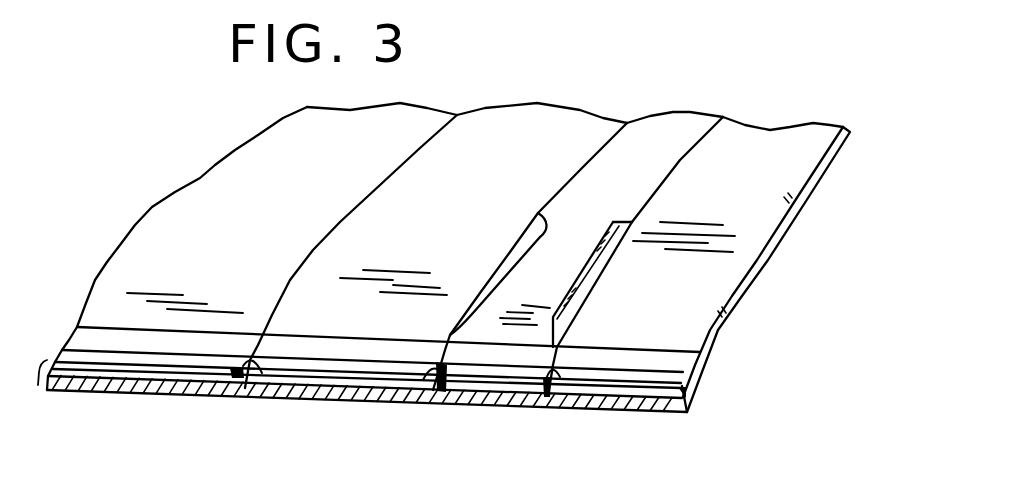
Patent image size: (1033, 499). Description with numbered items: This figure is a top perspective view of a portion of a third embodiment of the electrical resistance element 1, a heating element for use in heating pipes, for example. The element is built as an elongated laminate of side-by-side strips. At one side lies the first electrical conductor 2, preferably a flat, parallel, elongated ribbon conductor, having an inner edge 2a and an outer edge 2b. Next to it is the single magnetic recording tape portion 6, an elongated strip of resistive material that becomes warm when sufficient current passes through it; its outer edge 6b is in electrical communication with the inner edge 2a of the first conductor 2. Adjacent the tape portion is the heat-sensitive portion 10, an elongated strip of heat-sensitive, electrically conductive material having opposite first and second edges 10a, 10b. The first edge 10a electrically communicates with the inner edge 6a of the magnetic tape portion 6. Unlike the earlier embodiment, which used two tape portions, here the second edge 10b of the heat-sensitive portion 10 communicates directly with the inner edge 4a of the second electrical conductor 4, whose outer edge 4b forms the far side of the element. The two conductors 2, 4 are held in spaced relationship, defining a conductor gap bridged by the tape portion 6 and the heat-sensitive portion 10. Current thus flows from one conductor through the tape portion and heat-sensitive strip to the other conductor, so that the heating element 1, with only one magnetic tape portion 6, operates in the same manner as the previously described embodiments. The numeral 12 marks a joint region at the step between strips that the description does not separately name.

The electrical resistance element 1 is at (150, 200).
The first electrical conductor 2 is at (138, 390).
The inner edge of first electrical conductor 2a is at (243, 380).
The outer edge of first electrical conductor 2b is at (38, 385).
The second electrical conductor 4 is at (613, 383).
The inner edge of second electrical conductor 4a is at (553, 390).
The outer edge of second electrical conductor 4b is at (673, 395).
The first magnetic recording tape portion 6 is at (323, 388).
The inner edge of first magnetic recording tape portion 6a is at (420, 390).
The outer edge of first magnetic recording tape portion 6b is at (260, 373).
The heat-sensitive portion 10 is at (671, 133).
The first edge of heat-sensitive portion 10a is at (440, 390).
The second edge of heat-sensitive portion 10b is at (522, 388).
The overlapping joint flap 12 is at (578, 290).